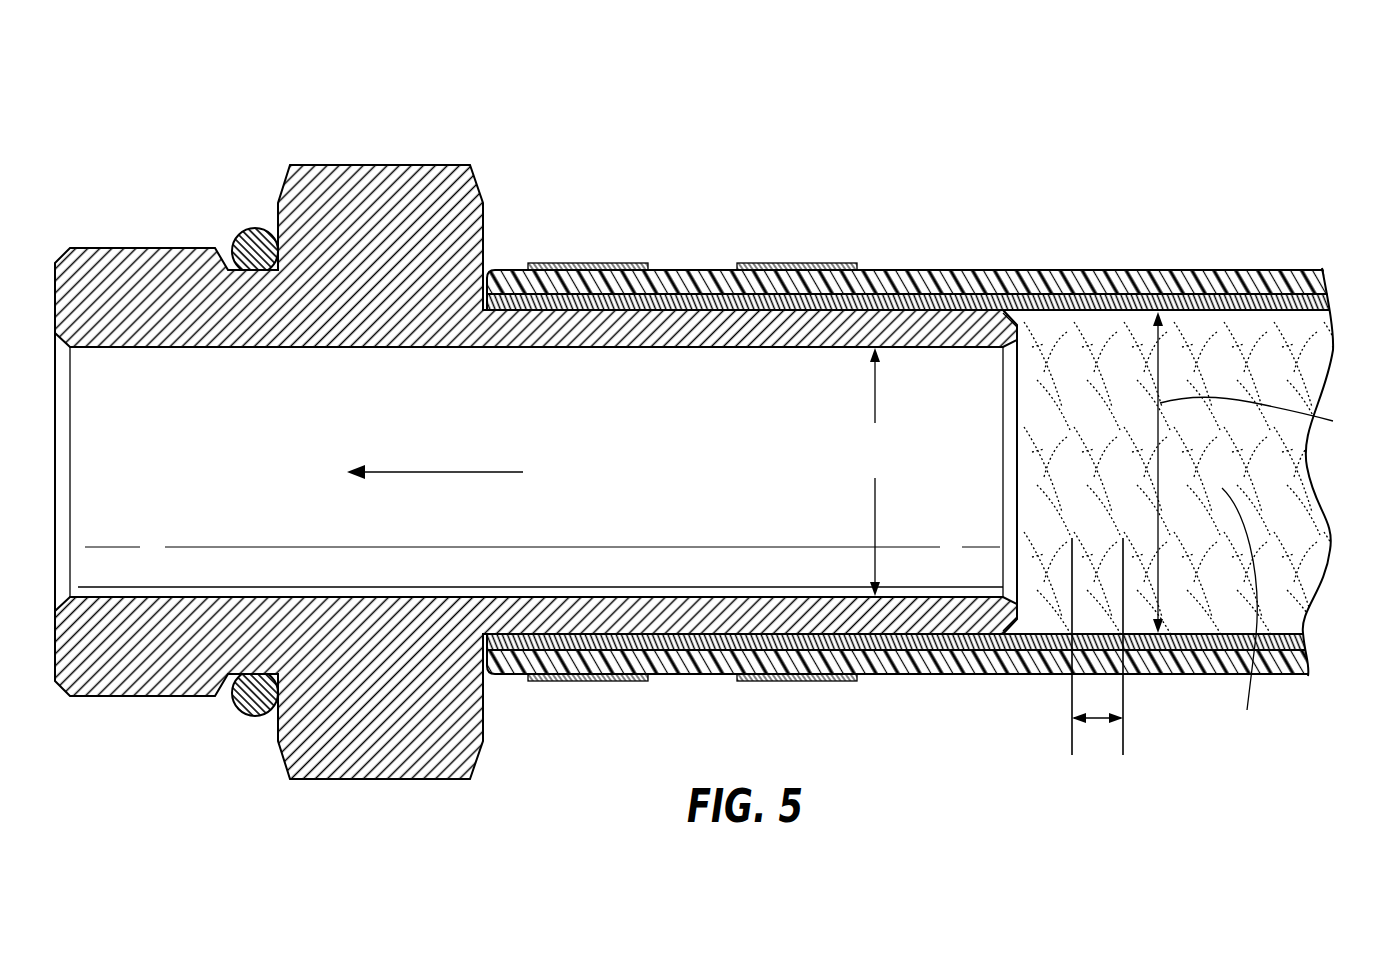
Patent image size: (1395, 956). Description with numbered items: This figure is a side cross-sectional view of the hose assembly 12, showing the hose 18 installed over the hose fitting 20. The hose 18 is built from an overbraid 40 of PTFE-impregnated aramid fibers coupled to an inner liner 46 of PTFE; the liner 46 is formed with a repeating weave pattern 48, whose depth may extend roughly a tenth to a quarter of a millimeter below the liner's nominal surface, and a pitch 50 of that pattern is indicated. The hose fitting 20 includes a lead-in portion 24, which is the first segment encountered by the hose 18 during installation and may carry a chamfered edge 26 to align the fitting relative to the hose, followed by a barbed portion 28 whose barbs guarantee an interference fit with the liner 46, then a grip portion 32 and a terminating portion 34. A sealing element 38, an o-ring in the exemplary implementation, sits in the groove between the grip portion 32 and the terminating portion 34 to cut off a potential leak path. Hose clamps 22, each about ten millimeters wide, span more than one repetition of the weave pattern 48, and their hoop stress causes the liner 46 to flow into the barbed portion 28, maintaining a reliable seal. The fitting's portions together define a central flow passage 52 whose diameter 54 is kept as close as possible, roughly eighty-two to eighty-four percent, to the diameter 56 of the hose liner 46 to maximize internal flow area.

The hose assembly 12 is at (163, 98).
The hose 18 is at (937, 469).
The hose fitting 20 is at (536, 458).
The hose clamps 22 is at (580, 264).
The lead-in portion 24 is at (985, 295).
The chamfered edge 26 is at (1020, 310).
The barbed portion 28 is at (692, 290).
The grip portion 32 is at (390, 165).
The terminating portion 34 is at (135, 248).
The sealing element 38 is at (240, 707).
The overbraid 40 is at (1140, 275).
The liner 46 is at (1257, 320).
The weave pattern 48 is at (1241, 617).
The braid pitch 50 is at (1097, 722).
The central flow passage 52 is at (457, 472).
The diameter of the central flow passage 54 is at (873, 472).
The diameter of the hose liner 56 is at (1262, 417).